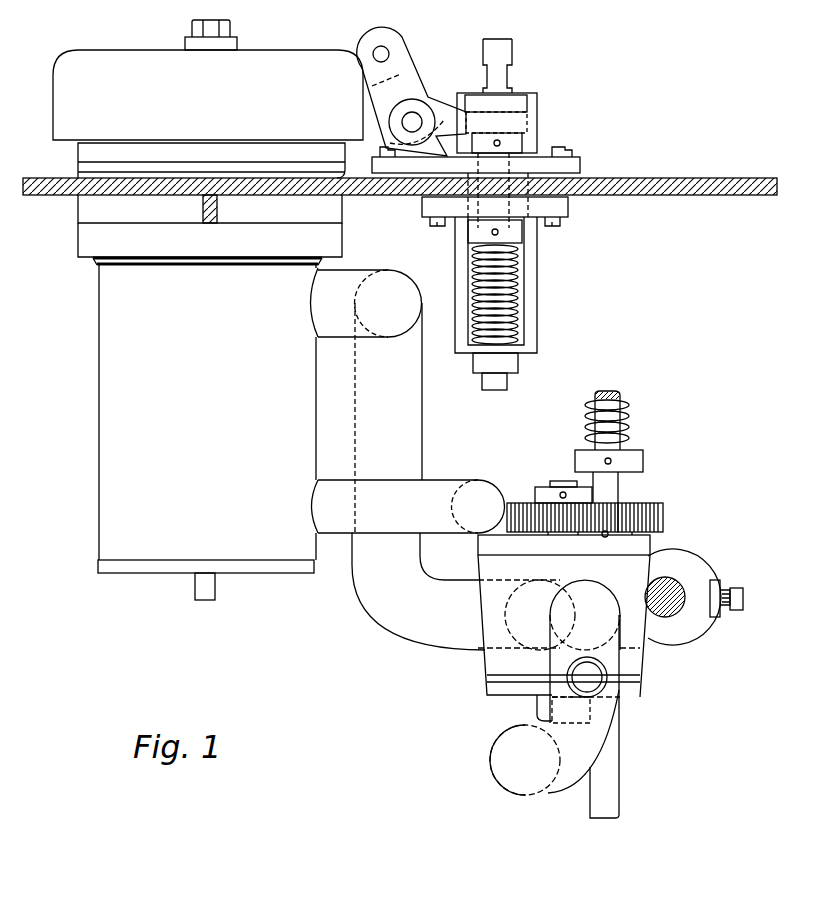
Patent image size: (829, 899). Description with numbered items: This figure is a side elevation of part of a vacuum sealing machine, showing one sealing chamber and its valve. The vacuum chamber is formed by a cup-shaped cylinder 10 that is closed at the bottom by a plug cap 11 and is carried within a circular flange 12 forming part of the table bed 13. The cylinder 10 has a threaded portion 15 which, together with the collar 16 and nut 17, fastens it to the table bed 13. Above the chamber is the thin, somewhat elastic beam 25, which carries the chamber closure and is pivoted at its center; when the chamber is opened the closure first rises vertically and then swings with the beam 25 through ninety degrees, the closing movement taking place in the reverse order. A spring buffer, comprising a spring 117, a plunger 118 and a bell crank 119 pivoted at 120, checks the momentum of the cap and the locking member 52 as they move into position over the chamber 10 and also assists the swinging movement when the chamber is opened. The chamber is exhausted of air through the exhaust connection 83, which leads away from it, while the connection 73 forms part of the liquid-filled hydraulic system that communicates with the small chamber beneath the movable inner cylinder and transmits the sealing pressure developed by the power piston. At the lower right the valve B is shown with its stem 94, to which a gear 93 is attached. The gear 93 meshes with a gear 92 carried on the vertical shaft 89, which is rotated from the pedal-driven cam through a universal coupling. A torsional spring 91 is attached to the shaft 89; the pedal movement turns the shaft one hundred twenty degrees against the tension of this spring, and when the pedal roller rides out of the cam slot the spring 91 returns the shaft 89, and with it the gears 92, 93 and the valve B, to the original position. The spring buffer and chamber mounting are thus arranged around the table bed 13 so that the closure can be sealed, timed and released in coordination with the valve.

The cup-shaped cylinder 10 is at (208, 412).
The plug cap 11 is at (140, 575).
The circular flange 12 is at (78, 208).
The table bed 13 is at (678, 166).
The threaded portion 15 is at (95, 265).
The collar 16 is at (78, 165).
The nut 17 is at (78, 240).
The beam 25 is at (237, 45).
The locking member 52 is at (208, 95).
The connection 73 is at (411, 565).
The exhaust connection 83 is at (424, 418).
The vertical shaft 89 is at (620, 777).
The torsional spring 91 is at (633, 421).
The gear 92 is at (665, 507).
The gear 93 is at (510, 503).
The valve stem 94 is at (563, 481).
The spring 117 is at (522, 291).
The plunger 118 is at (510, 387).
The bell crank 119 is at (446, 83).
The pivot 120 is at (410, 127).
The valve B is at (513, 660).